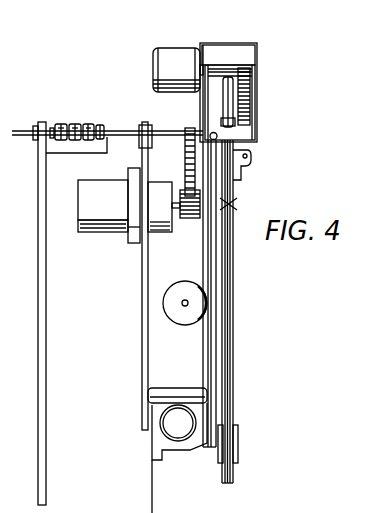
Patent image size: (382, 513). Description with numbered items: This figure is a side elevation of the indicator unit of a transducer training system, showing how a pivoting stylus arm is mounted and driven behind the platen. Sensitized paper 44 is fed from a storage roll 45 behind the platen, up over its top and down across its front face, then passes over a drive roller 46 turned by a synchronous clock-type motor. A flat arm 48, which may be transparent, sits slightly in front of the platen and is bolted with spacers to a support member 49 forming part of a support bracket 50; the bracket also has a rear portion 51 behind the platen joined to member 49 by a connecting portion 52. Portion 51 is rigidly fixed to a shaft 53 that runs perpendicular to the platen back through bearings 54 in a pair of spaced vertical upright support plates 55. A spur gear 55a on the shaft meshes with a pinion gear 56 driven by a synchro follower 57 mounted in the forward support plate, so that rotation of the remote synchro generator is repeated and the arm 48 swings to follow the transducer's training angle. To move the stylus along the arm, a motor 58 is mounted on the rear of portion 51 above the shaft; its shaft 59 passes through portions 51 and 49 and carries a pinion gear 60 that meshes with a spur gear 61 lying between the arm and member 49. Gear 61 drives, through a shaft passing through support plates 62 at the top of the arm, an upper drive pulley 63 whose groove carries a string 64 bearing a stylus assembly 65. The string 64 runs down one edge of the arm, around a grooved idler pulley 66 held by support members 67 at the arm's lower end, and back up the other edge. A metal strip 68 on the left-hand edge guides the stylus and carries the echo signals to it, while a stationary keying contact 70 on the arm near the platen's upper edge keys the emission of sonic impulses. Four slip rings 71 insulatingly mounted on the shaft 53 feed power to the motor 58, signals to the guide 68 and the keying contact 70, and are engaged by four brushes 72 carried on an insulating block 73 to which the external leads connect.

The sensitized paper 44 is at (152, 482).
The storage roll 45 is at (179, 292).
The drive roller 46 is at (178, 424).
The arm 48 is at (233, 391).
The support member 49 is at (256, 78).
The support bracket 50 is at (262, 48).
The portion of support bracket 51 is at (203, 106).
The connecting portion 52 is at (219, 50).
The shaft 53 is at (167, 130).
The bearings 54 is at (33, 132).
The vertical upright support plates 55 is at (40, 310).
The spur gear 55a is at (187, 178).
The pinion gear 56 is at (190, 220).
The synchro follower 57 is at (85, 217).
The motor 58 is at (176, 50).
The motor shaft 59 is at (225, 73).
The pinion gear 60 is at (252, 72).
The spur gear 61 is at (250, 90).
The support plates 62 is at (235, 123).
The upper drive pulley 63 is at (221, 101).
The string 64 is at (228, 270).
The stylus assembly 65 is at (238, 206).
The grooved idler pulley 66 is at (233, 478).
The support members 67 is at (238, 440).
The metal strip 68 is at (233, 347).
The keying contact 70 is at (251, 156).
The slip rings 71 is at (100, 141).
The brushes 72 is at (100, 125).
The block 73 is at (106, 154).